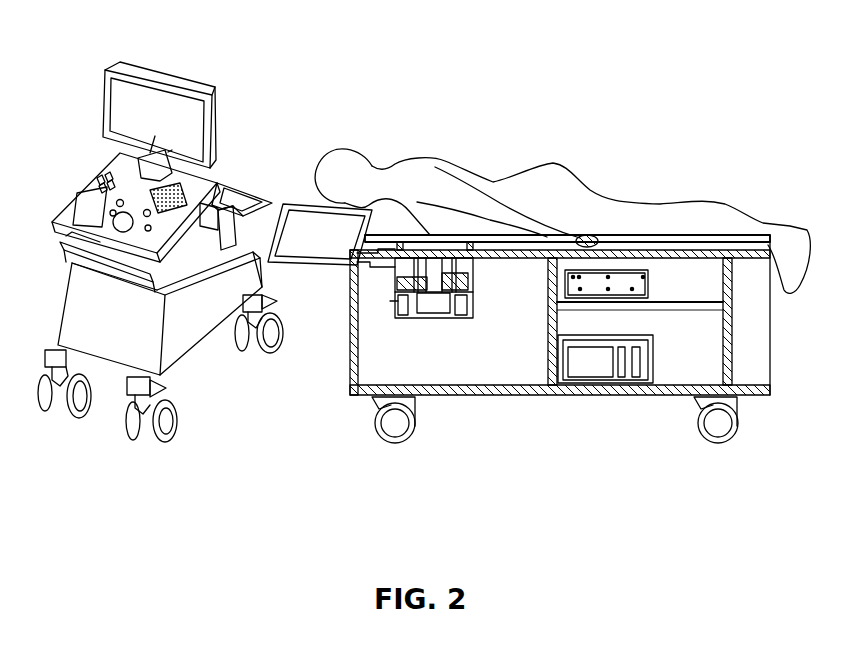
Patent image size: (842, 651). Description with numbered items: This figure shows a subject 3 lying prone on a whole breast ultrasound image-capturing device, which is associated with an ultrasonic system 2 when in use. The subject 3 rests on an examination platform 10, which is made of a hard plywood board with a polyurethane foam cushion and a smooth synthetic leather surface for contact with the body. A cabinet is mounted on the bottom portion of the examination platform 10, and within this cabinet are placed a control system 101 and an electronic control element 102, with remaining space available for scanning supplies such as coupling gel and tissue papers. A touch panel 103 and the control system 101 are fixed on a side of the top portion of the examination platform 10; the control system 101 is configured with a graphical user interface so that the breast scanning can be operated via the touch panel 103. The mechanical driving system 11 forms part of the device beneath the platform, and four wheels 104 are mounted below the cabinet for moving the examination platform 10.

The ultrasonic system 2 is at (120, 173).
The subject 3 is at (556, 188).
The examination platform 10 is at (725, 243).
The mechanical driving system 11 is at (430, 300).
The control system 101 is at (585, 365).
The electronic control element 102 is at (597, 283).
The touch panel 103 is at (313, 253).
The caster 104 is at (392, 427).